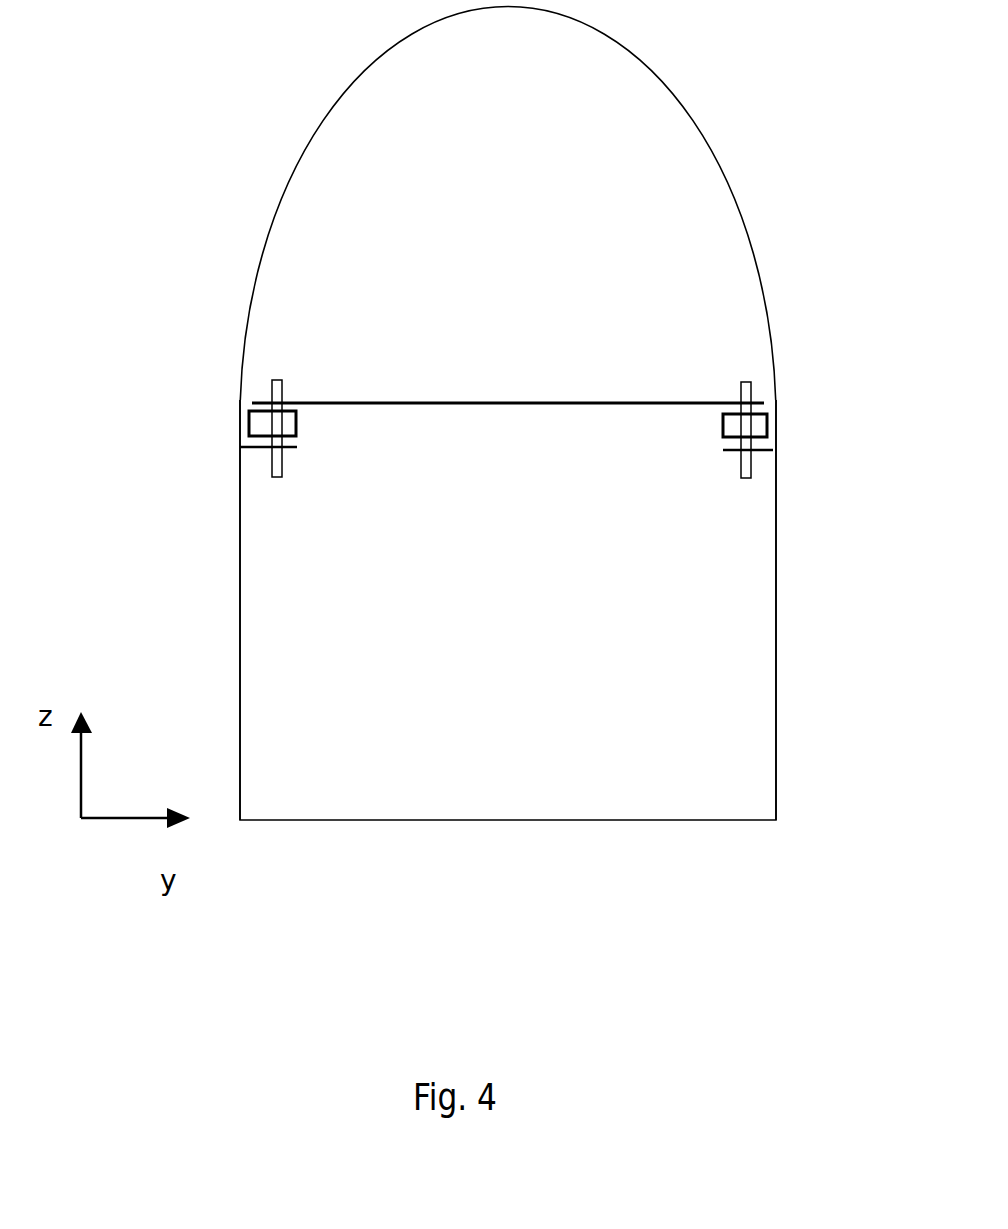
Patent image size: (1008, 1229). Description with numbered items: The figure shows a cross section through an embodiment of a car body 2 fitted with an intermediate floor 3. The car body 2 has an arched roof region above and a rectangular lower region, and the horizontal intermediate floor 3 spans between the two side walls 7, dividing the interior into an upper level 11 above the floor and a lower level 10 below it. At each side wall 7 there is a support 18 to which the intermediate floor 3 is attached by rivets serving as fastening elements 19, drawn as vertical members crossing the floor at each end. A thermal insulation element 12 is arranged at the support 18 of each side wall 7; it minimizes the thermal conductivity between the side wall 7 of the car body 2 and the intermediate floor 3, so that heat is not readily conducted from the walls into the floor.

The car body 2 is at (508, 413).
The intermediate floor 3 is at (447, 403).
The side wall 7 is at (240, 430).
The lower level 10 is at (608, 632).
The upper level 11 is at (583, 220).
The thermal insulation element 12 is at (292, 424).
The support 18 is at (292, 446).
The fastening element 19 is at (272, 390).